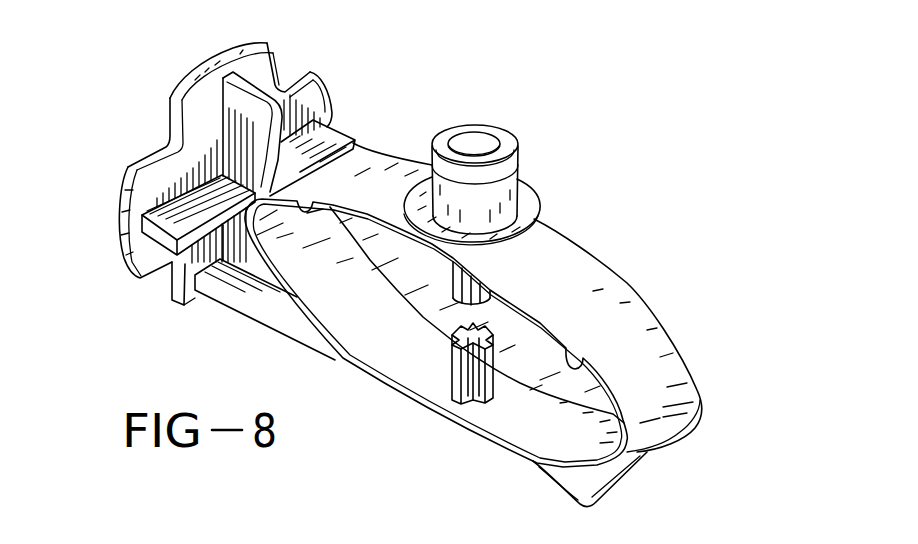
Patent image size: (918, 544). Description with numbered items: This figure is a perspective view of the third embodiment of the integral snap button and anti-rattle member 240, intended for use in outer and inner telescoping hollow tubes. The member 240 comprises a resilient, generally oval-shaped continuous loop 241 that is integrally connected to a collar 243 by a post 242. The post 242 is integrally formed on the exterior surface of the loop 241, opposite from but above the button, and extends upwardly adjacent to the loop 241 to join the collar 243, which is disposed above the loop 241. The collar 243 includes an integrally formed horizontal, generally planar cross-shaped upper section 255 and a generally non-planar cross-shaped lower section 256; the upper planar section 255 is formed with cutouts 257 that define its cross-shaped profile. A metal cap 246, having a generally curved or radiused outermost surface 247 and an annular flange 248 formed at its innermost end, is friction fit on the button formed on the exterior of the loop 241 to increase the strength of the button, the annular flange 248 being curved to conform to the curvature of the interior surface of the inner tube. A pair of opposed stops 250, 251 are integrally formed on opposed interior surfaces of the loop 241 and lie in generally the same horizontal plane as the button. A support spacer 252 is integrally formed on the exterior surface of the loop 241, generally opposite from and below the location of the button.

The snap button/anti-rattle member 240 is at (642, 189).
The resilient oval-shaped continuous loop 241 is at (627, 285).
The post 242 is at (271, 302).
The collar 243 is at (168, 146).
The metal cap 246 is at (522, 172).
The curved outermost surface 247 is at (490, 126).
The annular flange 248 is at (516, 224).
The stop 250 is at (458, 287).
The stop 251 is at (457, 380).
The support spacer 252 is at (613, 477).
The upper section 255 is at (198, 75).
The lower section 256 is at (318, 145).
The cutouts 257 is at (293, 70).